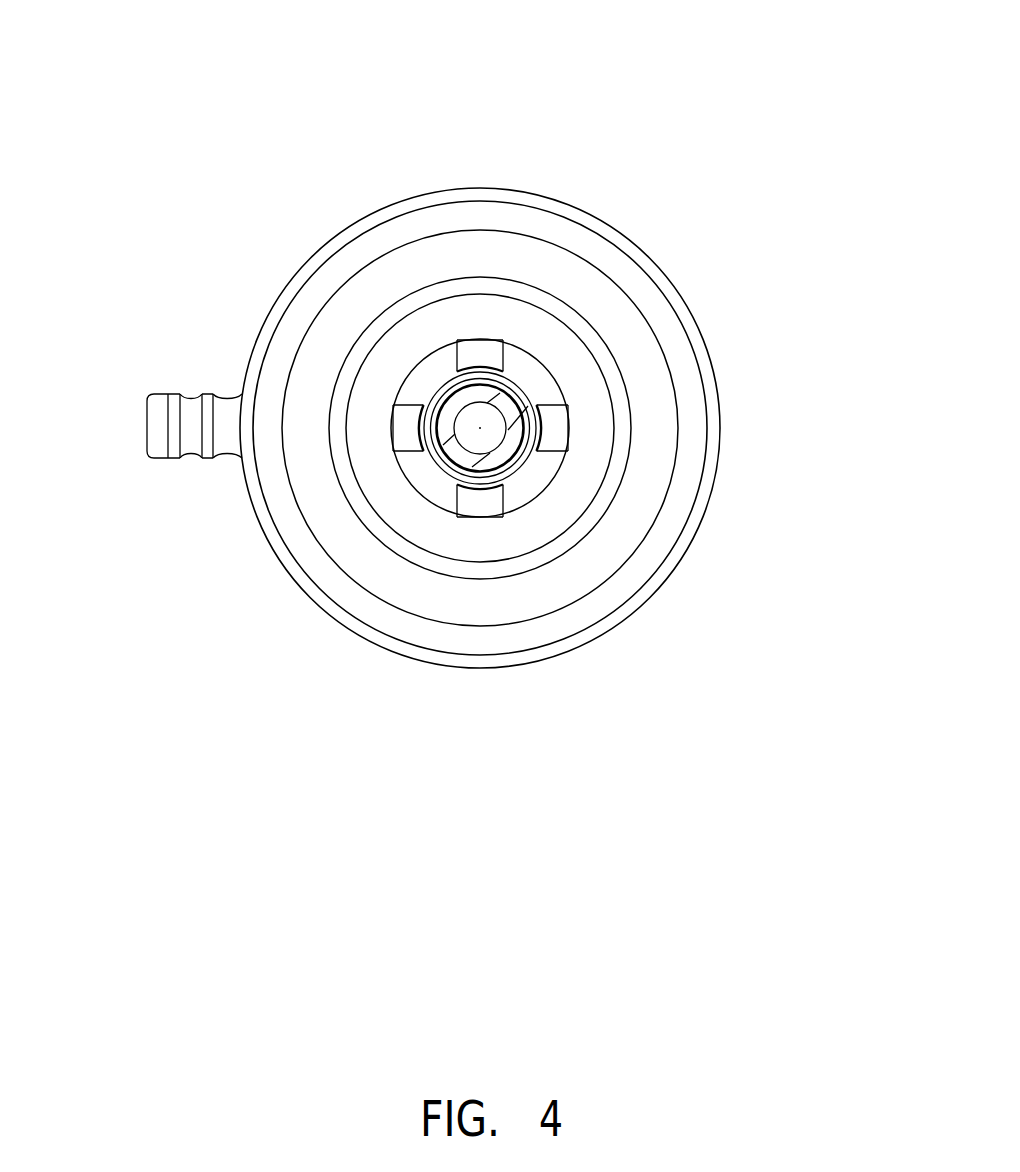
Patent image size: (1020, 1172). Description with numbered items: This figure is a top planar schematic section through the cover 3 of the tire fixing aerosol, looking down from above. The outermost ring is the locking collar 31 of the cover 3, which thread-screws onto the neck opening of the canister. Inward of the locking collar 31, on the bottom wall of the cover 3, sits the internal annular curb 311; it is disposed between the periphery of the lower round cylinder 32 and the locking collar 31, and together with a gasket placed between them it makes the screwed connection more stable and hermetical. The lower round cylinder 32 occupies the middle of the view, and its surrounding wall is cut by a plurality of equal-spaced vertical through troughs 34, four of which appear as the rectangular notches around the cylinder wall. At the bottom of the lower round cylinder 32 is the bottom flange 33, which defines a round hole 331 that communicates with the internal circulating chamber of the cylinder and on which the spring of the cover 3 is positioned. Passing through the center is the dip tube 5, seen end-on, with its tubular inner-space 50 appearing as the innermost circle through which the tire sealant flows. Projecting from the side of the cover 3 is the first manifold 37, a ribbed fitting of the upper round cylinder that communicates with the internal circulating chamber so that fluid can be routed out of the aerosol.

The cover 3 is at (506, 188).
The locking collar 31 is at (332, 605).
The internal annular curb 311 is at (623, 417).
The lower round cylinder 32 is at (503, 364).
The bottom flange 33 is at (533, 377).
The round hole 331 is at (523, 403).
The vertical through trough 34 is at (405, 427).
The first manifold 37 is at (160, 428).
The dip tube 5 is at (457, 455).
The tubular inner-space 50 is at (480, 428).